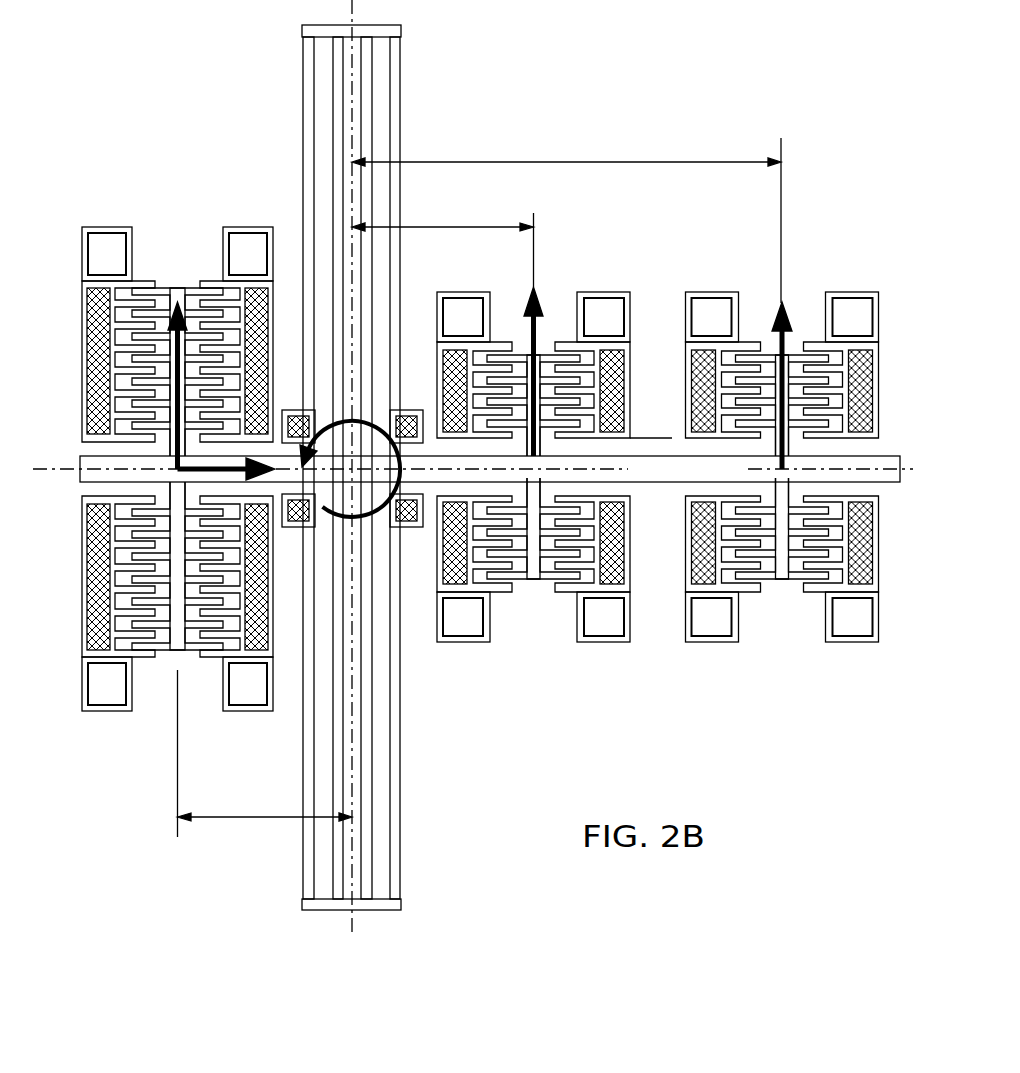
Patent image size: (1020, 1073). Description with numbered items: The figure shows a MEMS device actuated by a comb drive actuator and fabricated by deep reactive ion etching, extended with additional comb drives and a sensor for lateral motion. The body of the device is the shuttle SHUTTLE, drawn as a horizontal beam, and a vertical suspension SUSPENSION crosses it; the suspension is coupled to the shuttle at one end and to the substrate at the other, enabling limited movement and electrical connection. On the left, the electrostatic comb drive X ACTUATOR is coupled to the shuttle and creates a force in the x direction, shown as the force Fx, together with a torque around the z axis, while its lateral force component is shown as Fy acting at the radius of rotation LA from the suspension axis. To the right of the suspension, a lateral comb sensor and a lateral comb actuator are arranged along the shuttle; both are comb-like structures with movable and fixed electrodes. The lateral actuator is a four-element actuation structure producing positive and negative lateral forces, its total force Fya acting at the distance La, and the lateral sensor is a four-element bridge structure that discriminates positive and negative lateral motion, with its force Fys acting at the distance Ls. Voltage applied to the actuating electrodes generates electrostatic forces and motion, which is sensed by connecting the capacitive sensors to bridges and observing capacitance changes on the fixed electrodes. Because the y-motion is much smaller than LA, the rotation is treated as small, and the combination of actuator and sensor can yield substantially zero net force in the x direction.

The suspension SUSPENSION is at (359, 466).
The shuttle SHUTTLE is at (473, 467).
The comb drive actuator X ACTUATOR is at (151, 469).
The lateral force on comb actuator Fy is at (198, 382).
The x-direction force Fx is at (227, 489).
The lateral sensor force Fys is at (553, 358).
The total lateral actuator force Fya is at (761, 362).
The lateral actuator lever arm La is at (566, 218).
The lateral sensor lever arm Ls is at (443, 241).
The radius of rotation LA is at (265, 753).